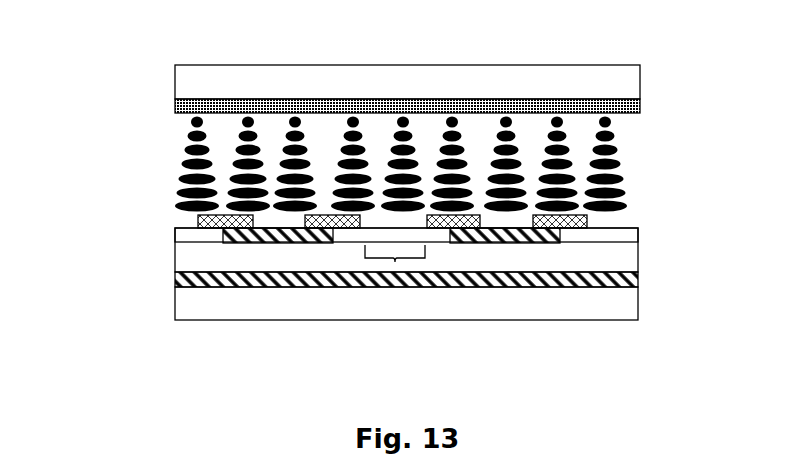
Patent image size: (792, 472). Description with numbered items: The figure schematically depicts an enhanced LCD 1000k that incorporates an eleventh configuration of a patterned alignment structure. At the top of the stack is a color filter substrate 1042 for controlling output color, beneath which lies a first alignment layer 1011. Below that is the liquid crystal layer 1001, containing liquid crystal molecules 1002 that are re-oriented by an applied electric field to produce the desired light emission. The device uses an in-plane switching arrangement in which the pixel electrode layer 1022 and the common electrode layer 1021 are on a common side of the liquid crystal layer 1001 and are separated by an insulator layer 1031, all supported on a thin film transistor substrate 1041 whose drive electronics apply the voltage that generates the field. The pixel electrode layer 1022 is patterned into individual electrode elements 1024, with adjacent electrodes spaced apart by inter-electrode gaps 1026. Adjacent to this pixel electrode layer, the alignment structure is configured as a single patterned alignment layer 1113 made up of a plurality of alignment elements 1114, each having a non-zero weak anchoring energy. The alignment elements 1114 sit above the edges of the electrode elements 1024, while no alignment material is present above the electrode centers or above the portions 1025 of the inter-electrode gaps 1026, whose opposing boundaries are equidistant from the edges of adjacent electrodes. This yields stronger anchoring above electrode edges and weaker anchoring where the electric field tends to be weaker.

The enhanced LCD 1000k is at (150, 68).
The liquid crystal molecules 1002 is at (567, 160).
The color filter substrate 1042 is at (648, 65).
The first alignment layer 1011 is at (648, 98).
The liquid crystal layer 1001 is at (648, 117).
The patterned alignment layer 1113 is at (648, 215).
The pixel electrode layer 1022 is at (648, 228).
The insulator layer 1031 is at (648, 242).
The common electrode layer 1021 is at (648, 272).
The thin film transistor substrate 1041 is at (648, 287).
The electrode elements 1024 is at (273, 243).
The inter-electrode gaps 1026 is at (350, 243).
The portions of the inter-electrode gaps 1025 is at (395, 260).
The alignment elements 1114 is at (578, 228).